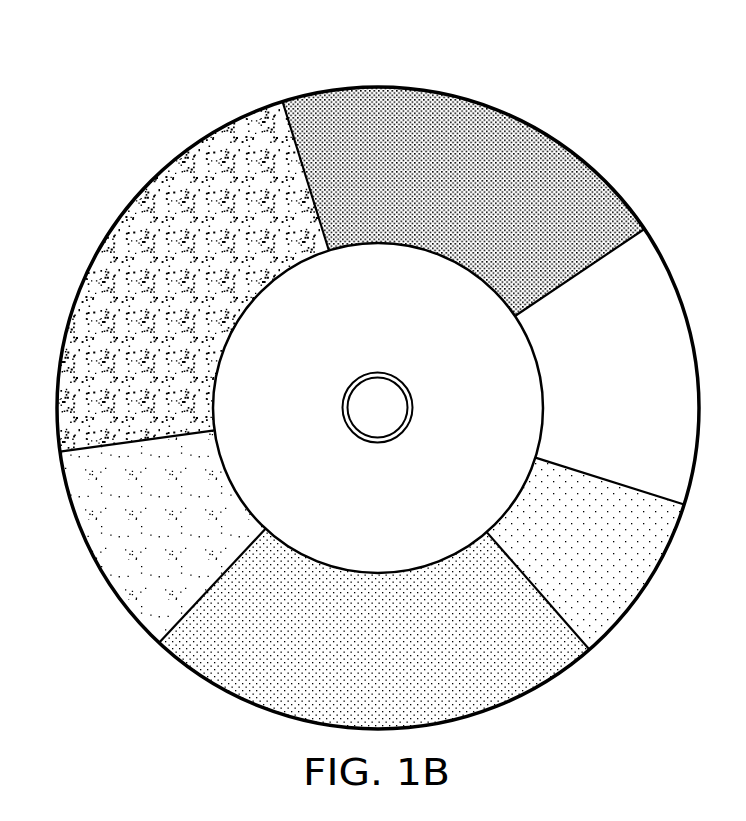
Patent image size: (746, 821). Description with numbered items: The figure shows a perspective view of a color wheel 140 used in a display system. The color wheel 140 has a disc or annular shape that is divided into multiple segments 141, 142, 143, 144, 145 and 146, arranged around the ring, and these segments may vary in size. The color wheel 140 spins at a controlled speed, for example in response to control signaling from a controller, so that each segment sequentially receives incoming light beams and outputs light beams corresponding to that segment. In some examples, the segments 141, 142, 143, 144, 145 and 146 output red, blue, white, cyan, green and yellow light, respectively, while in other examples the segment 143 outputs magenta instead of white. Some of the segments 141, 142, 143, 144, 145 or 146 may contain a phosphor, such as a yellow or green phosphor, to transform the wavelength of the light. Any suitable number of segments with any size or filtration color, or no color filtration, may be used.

The color wheel 140 is at (210, 73).
The segment 141 is at (188, 293).
The segment 142 is at (480, 193).
The segment 143 is at (638, 376).
The segment 144 is at (607, 549).
The segment 145 is at (395, 647).
The segment 146 is at (188, 526).